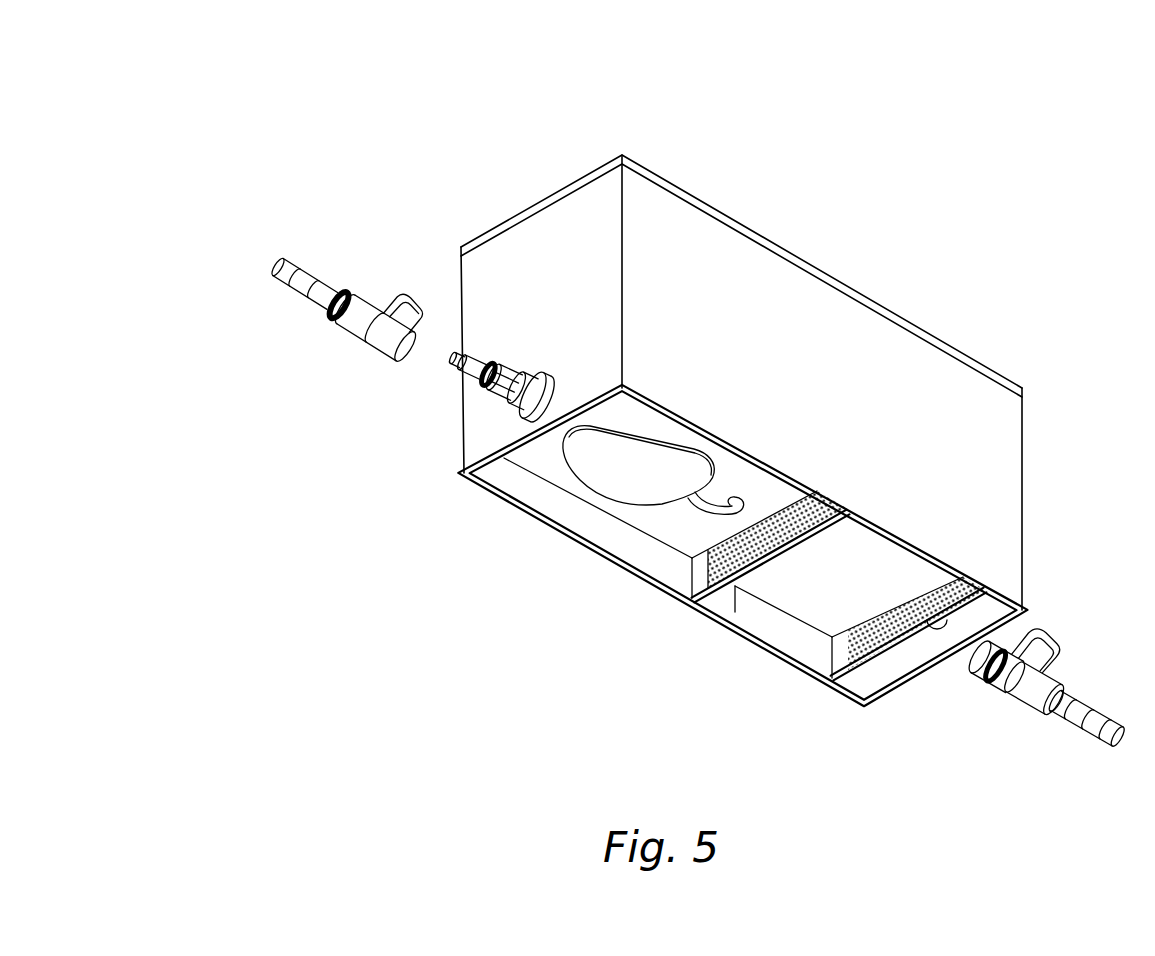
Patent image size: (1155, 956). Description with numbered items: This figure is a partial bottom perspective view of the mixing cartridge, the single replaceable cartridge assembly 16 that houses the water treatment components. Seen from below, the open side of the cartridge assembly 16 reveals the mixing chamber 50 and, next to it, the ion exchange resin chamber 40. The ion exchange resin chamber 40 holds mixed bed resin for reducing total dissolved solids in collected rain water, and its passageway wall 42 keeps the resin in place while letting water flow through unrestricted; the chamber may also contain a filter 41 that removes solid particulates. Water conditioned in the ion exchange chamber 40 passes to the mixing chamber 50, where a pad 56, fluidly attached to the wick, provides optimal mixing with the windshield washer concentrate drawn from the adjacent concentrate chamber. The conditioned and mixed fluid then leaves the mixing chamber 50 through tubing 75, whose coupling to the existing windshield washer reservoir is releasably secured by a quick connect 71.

The cartridge assembly 16 is at (794, 441).
The ion exchange resin chamber 40 is at (830, 603).
The filter 41 is at (880, 673).
The passageway wall 42 is at (718, 578).
The mixing chamber 50 is at (654, 565).
The pad 56 is at (599, 472).
The quick connect 71 is at (388, 330).
The tubing 75 is at (302, 283).